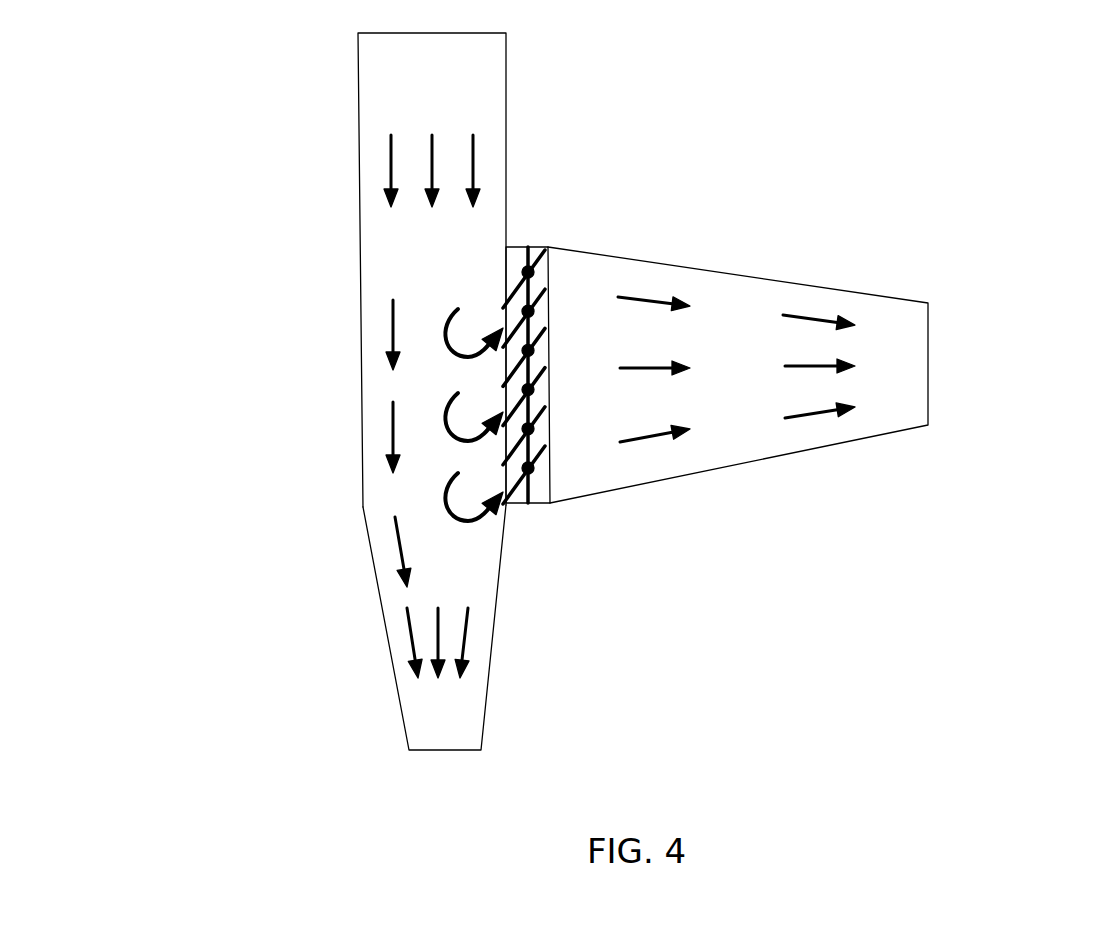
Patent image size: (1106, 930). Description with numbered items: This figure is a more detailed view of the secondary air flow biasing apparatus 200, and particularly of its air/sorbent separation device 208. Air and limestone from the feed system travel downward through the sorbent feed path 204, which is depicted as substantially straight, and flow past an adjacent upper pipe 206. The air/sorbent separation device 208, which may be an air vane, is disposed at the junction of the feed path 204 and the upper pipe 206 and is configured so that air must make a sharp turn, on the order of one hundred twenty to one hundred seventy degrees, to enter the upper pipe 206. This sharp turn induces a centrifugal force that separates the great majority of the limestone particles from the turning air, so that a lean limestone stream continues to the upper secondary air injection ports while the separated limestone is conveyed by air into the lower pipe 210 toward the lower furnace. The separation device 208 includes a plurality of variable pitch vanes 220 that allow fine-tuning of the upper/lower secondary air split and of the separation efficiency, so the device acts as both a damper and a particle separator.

The secondary air flow biasing apparatus 200 is at (160, 168).
The sorbent feed path 204 is at (506, 162).
The upper pipe 206 is at (928, 316).
The air/sorbent separation device 208 is at (546, 543).
The lower pipe 210 is at (487, 705).
The variable pitch vanes 220 is at (507, 299).